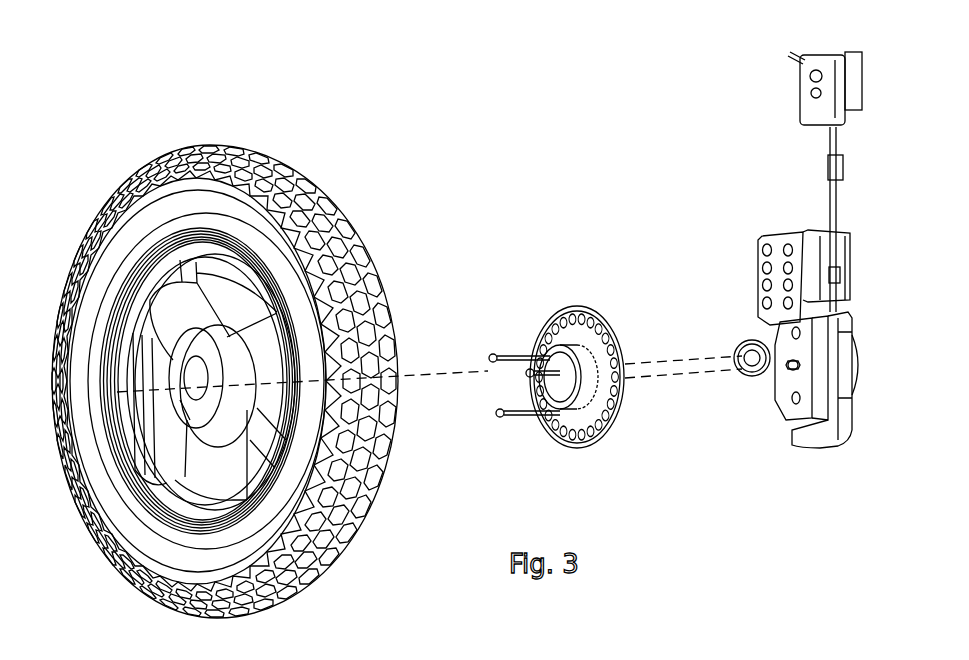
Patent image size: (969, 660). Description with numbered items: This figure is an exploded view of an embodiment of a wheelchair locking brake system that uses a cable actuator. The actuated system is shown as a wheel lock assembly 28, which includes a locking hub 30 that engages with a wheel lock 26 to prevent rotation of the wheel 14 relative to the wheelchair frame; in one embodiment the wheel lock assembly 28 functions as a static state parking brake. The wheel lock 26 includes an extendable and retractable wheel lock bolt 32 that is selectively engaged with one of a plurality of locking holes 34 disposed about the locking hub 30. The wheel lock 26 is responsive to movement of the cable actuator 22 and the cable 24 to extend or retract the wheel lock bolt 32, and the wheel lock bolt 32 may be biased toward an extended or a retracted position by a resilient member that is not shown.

The wheel 14 is at (322, 198).
The cable actuator 22 is at (778, 76).
The cable 24 is at (830, 197).
The wheel lock 26 is at (876, 378).
The wheel lock assembly 28 is at (853, 440).
The locking hub 30 is at (555, 308).
The wheel lock bolt 32 is at (793, 372).
The locking holes 34 is at (607, 345).